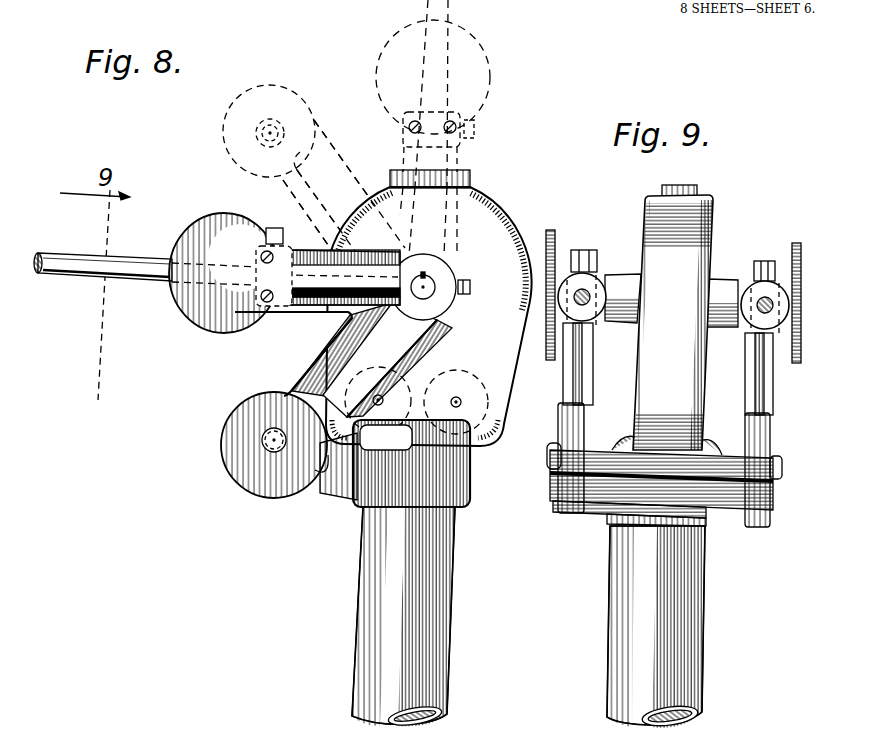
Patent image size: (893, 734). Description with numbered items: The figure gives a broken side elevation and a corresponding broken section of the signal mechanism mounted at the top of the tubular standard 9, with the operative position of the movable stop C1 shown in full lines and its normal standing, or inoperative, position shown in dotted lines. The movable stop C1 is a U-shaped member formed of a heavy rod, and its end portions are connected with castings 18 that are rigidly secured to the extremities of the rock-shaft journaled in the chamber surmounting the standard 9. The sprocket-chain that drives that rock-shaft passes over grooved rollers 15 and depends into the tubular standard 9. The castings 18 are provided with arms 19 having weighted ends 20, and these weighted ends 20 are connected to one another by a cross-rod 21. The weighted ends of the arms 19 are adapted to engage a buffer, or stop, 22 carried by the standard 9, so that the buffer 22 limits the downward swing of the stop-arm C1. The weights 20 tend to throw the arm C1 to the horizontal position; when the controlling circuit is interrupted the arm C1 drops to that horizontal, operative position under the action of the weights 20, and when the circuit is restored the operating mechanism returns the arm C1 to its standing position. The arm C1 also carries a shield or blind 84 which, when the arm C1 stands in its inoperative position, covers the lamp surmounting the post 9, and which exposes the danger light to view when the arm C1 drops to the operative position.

In FIG. 8, the standard 9 is at (403, 618).
In FIG. 9, the standard 9 is at (656, 627).
In FIG. 8, the grooved rollers 15 is at (405, 385).
In FIG. 9, the castings 18 is at (790, 297).
In FIG. 9, the arms 19 is at (568, 383).
In FIG. 8, the weighted ends 20 is at (250, 458).
In FIG. 8, the cross-rod 21 is at (270, 452).
In FIG. 8, the buffer or stop 22 is at (341, 485).
In FIG. 9, the buffer or stop 22 is at (606, 505).
In FIG. 8, the shield or blind 84 is at (392, 58).
In FIG. 8, the movable stop C1 is at (502, 62).